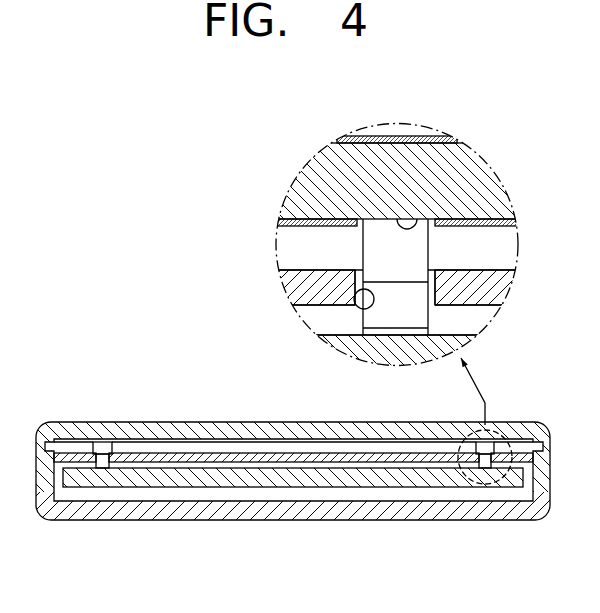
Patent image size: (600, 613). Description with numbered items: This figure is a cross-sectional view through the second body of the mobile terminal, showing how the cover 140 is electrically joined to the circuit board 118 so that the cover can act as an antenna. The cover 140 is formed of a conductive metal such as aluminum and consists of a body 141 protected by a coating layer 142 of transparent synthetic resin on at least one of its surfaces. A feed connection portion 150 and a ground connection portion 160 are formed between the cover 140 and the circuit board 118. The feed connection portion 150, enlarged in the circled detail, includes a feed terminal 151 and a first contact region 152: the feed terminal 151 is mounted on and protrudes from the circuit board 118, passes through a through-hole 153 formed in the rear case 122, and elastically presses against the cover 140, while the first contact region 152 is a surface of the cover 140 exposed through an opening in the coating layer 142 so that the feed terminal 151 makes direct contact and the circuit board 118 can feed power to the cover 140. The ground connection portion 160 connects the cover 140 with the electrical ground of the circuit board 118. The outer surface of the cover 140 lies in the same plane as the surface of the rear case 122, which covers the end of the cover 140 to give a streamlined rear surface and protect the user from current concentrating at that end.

The circuit board 118 is at (305, 480).
The rear case 122 is at (292, 287).
The cover 140 is at (190, 414).
The body 141 is at (300, 171).
The coating layer 142 is at (372, 135).
The feed connection portion 150 is at (497, 447).
The feed terminal 151 is at (373, 253).
The first contact region 152 is at (419, 216).
The through-hole 153 is at (362, 314).
The ground connection portion 160 is at (88, 437).